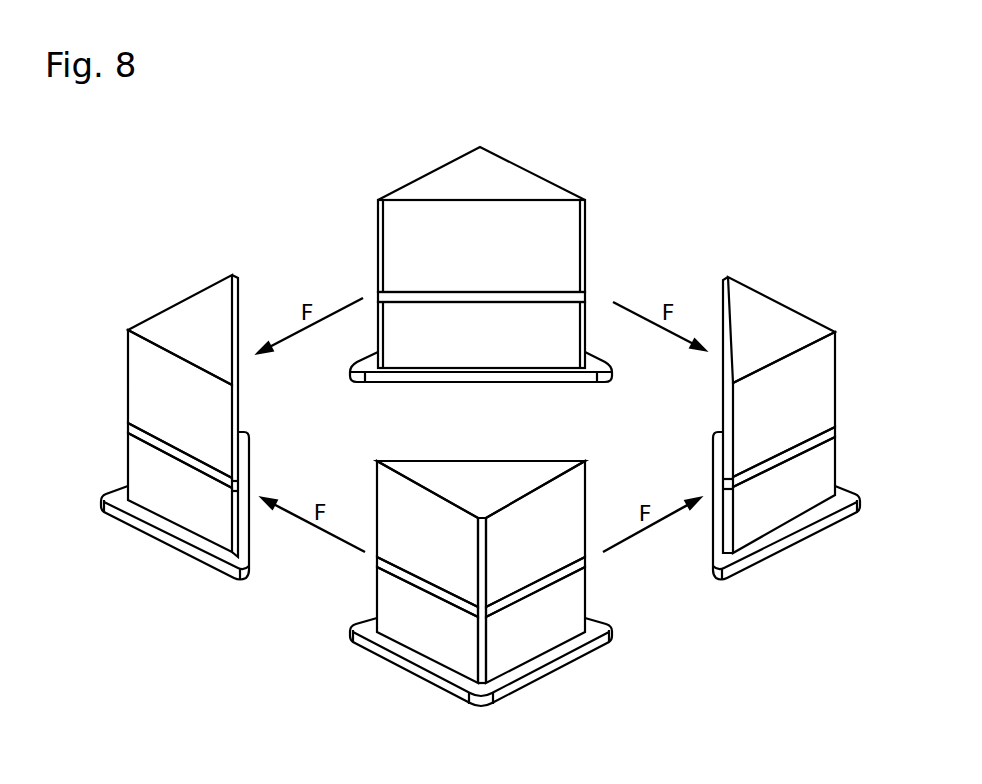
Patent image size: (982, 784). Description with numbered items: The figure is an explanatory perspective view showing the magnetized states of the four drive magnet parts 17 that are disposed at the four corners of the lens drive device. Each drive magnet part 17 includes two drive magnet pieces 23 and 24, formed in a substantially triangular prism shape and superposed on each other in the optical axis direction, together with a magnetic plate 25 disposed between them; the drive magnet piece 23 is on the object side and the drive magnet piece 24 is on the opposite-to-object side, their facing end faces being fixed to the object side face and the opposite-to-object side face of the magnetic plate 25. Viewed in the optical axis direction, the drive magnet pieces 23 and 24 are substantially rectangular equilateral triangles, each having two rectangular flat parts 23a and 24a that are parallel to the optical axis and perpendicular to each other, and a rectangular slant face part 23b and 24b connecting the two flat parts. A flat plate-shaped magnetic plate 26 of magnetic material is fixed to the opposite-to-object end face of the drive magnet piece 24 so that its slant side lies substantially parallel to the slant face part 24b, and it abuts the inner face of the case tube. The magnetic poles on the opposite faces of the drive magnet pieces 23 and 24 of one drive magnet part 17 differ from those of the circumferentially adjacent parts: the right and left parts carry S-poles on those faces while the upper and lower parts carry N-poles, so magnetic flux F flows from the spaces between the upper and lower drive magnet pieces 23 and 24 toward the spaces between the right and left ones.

The drive magnet part 17 is at (526, 168).
The drive magnet piece 23 is at (481, 403).
The flat part 23a is at (133, 375).
The slant face part 23b is at (386, 229).
The drive magnet piece 24 is at (481, 477).
The flat part 24a is at (133, 471).
The slant face part 24b is at (386, 329).
The magnetic plate 25 is at (590, 296).
The magnetic plate 26 is at (514, 384).